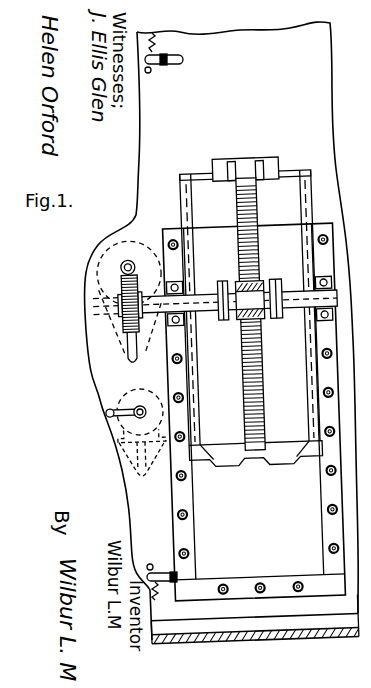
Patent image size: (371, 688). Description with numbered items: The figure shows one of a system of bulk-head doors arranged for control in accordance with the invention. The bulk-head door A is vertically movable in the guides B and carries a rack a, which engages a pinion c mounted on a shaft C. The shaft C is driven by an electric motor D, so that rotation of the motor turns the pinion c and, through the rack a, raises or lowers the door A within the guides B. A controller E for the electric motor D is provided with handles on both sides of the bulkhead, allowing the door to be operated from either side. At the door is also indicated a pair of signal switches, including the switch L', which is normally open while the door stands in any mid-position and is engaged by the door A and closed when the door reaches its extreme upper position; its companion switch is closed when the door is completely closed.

The bulk-head door A is at (301, 206).
The guides B is at (322, 495).
The rack a is at (264, 267).
The pinion c is at (268, 289).
The shaft C is at (126, 306).
The electric motor D is at (105, 270).
The controller E is at (117, 423).
The signal switch L' is at (171, 60).